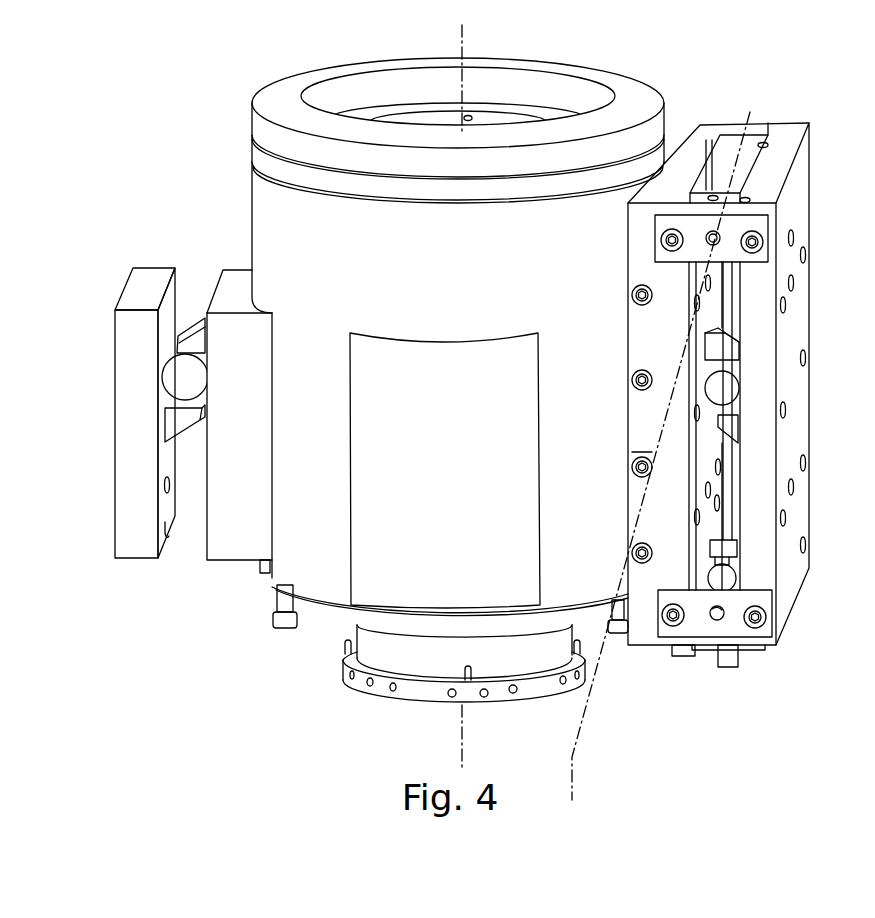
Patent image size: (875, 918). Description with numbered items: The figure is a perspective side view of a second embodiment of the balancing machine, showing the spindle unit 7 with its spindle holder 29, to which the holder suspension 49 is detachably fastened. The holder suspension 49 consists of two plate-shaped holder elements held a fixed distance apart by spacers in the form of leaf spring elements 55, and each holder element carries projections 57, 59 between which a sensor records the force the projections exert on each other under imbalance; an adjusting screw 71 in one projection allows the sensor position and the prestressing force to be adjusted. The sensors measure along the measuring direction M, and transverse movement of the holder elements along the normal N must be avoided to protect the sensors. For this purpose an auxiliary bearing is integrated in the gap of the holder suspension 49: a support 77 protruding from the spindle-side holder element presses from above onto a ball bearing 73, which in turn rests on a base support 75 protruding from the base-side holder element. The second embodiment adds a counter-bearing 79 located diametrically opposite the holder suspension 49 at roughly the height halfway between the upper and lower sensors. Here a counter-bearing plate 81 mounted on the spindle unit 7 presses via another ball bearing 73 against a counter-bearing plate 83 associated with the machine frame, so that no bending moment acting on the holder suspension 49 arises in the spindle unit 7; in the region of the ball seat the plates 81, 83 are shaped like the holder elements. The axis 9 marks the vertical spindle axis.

The spindle unit 7 is at (215, 160).
The axis 9 is at (463, 30).
The spindle holder 29 is at (370, 548).
The holder suspension 49 is at (822, 198).
The leaf spring elements 55 is at (692, 228).
The projection 57 is at (735, 568).
The projection 59 is at (712, 247).
The adjusting screw 71 is at (705, 590).
The ball bearing 73 is at (175, 383).
The base support 75 is at (173, 427).
The support 77 is at (185, 325).
The counter-bearing 79 is at (158, 463).
The counter-bearing plate 81 is at (212, 535).
The counter-bearing plate 83 is at (135, 523).
The measuring direction M is at (653, 452).
The normal N is at (572, 752).